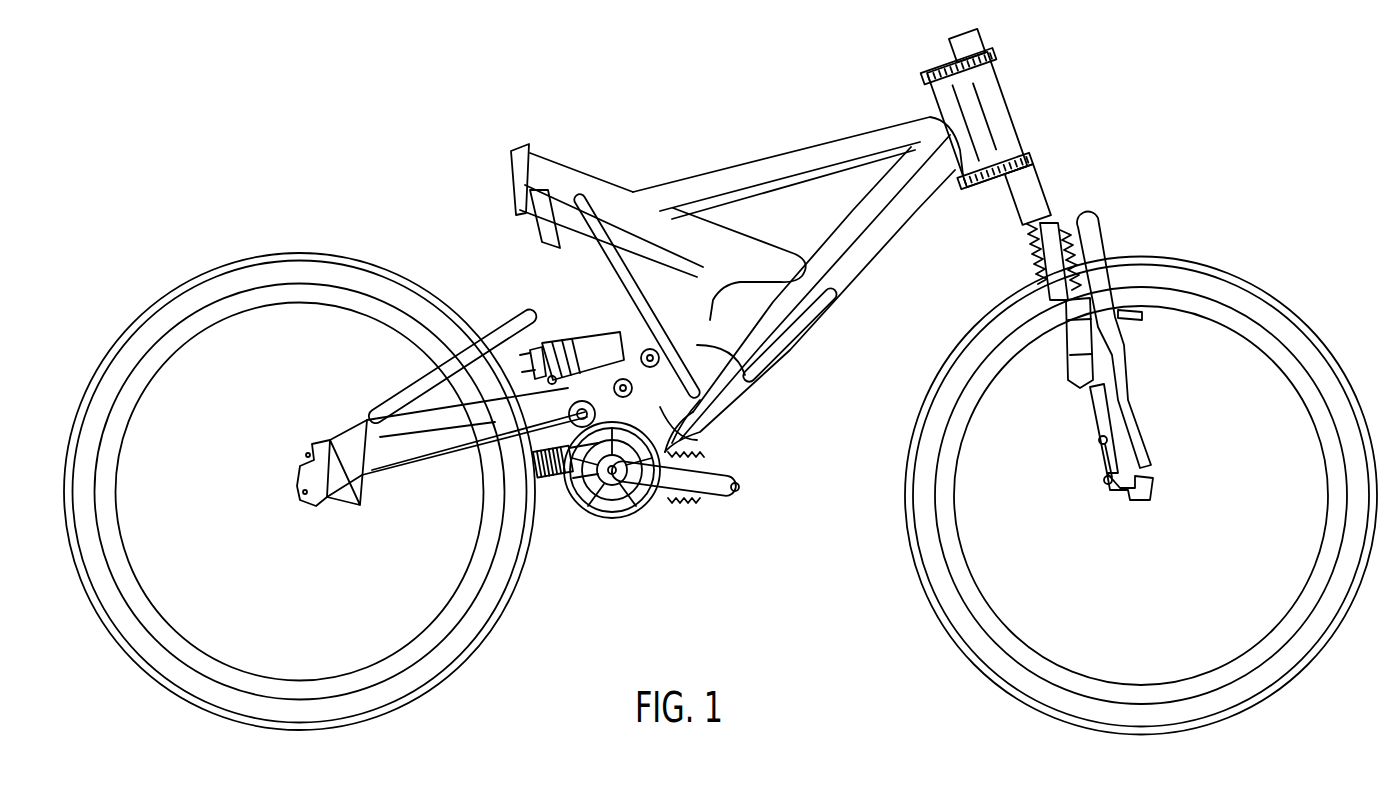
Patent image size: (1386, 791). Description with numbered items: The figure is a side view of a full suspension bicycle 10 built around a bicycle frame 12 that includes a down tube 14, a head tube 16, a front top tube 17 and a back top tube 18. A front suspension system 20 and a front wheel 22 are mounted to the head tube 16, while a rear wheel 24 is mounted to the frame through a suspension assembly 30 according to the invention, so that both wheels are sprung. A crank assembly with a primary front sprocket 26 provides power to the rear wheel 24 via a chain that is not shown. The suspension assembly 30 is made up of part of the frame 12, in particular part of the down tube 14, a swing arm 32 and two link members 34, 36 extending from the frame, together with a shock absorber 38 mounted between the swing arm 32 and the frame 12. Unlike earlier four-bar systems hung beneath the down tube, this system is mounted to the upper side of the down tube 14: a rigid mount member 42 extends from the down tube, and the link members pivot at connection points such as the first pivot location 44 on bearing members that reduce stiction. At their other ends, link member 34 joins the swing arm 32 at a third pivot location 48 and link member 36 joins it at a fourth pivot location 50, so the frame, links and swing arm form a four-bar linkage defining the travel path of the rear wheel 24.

The bicycle 10 is at (705, 115).
The bicycle frame 12 is at (832, 318).
The down tube 14 is at (858, 248).
The head tube 16 is at (965, 115).
The front top tube 17 is at (773, 168).
The back top tube 18 is at (662, 235).
The front suspension system 20 is at (1040, 190).
The front wheel 22 is at (1190, 257).
The rear wheel 24 is at (293, 253).
The primary front sprocket 26 is at (633, 520).
The suspension assembly 30 is at (505, 305).
The swing arm 32 is at (435, 433).
The link member 34 is at (700, 410).
The link member 36 is at (548, 486).
The shock absorber 38 is at (590, 335).
The mount member 42 is at (745, 380).
The first pivot location 44 is at (662, 352).
The third pivot location 48 is at (672, 444).
The fourth pivot location 50 is at (535, 463).